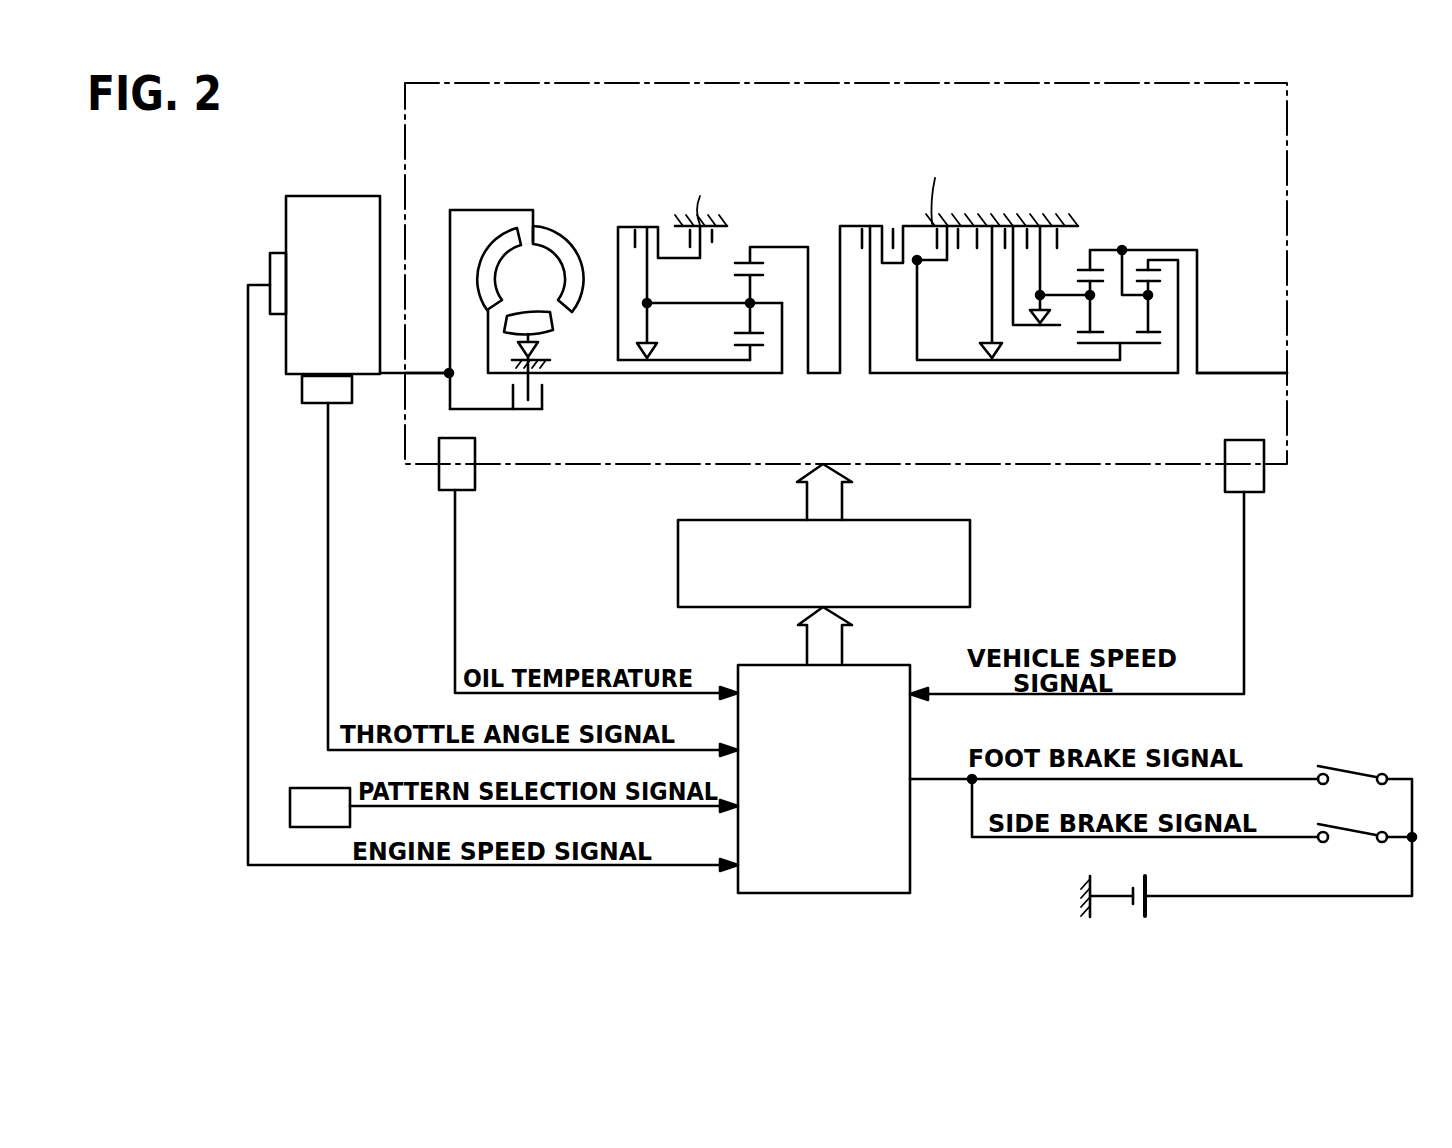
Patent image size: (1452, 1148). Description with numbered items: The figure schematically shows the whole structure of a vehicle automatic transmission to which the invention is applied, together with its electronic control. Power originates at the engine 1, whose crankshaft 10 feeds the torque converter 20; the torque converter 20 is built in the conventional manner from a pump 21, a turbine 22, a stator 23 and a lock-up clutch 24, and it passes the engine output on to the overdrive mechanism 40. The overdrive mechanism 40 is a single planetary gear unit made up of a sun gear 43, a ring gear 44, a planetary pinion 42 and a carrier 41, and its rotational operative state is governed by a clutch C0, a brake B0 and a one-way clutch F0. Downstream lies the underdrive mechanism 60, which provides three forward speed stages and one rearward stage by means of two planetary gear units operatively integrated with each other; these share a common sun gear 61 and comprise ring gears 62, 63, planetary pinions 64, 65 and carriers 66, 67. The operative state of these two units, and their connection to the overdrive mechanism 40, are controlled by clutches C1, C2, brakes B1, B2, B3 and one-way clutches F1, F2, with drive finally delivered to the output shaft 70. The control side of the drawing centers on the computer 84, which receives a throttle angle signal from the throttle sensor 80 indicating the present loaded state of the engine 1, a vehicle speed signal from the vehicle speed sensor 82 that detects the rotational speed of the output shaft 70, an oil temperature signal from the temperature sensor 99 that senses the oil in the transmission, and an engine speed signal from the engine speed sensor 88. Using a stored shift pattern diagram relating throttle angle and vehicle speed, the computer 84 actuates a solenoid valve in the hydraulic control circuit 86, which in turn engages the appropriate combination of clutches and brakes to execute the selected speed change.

The engine 1 is at (326, 203).
The crankshaft 10 is at (428, 375).
The torque converter 20 is at (616, 292).
The pump 21 is at (564, 241).
The turbine 22 is at (495, 258).
The stator 23 is at (550, 322).
The lock-up clutch 24 is at (499, 410).
The overdrive mechanism 40 is at (713, 250).
The carrier 41 is at (782, 306).
The planetary pinion 42 is at (736, 278).
The sun gear 43 is at (738, 343).
The ring gear 44 is at (750, 250).
The underdrive mechanism 60 is at (1047, 270).
The common sun gear 61 is at (1130, 345).
The ring gear 62 is at (1146, 268).
The ring gear 63 is at (1090, 268).
The planetary pinion 64 is at (1152, 283).
The planetary pinion 65 is at (1100, 288).
The carrier 66 is at (1149, 301).
The carrier 67 is at (1063, 297).
The output shaft 70 is at (1250, 373).
The throttle sensor 80 is at (343, 397).
The vehicle speed sensor 82 is at (1231, 478).
The computer 84 is at (827, 882).
The hydraulic control circuit 86 is at (824, 563).
The engine speed sensor 88 is at (267, 262).
The temperature sensor 99 is at (476, 465).
The clutch C0 is at (646, 226).
The clutch C1 is at (862, 229).
The clutch C2 is at (893, 229).
The brake B0 is at (714, 240).
The brake B1 is at (958, 229).
The brake B2 is at (1013, 229).
The brake B3 is at (1062, 224).
The one-way clutch F0 is at (653, 352).
The one-way clutch F1 is at (984, 344).
The one-way clutch F2 is at (1047, 294).